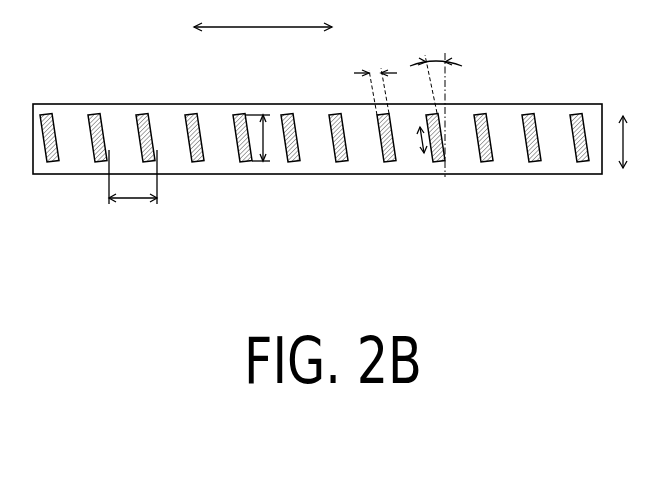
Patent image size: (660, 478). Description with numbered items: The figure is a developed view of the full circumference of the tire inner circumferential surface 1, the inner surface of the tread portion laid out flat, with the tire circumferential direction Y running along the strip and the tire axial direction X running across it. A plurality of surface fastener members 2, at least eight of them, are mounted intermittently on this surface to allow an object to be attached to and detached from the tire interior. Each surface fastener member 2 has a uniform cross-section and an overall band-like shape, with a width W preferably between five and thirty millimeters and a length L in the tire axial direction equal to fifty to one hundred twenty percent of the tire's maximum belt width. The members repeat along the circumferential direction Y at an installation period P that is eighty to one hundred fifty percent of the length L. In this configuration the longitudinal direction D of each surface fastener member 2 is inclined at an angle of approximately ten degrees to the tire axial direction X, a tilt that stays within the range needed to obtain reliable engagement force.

The tire inner circumferential surface 1 is at (507, 112).
The surface fastener member 2 is at (92, 116).
The tire circumferential direction Y is at (263, 28).
The tire axial direction X is at (621, 142).
The width of surface fastener member W is at (375, 82).
The length in tire axial direction L is at (280, 135).
The installation period P is at (133, 186).
The longitudinal direction of surface fastener member D is at (418, 142).